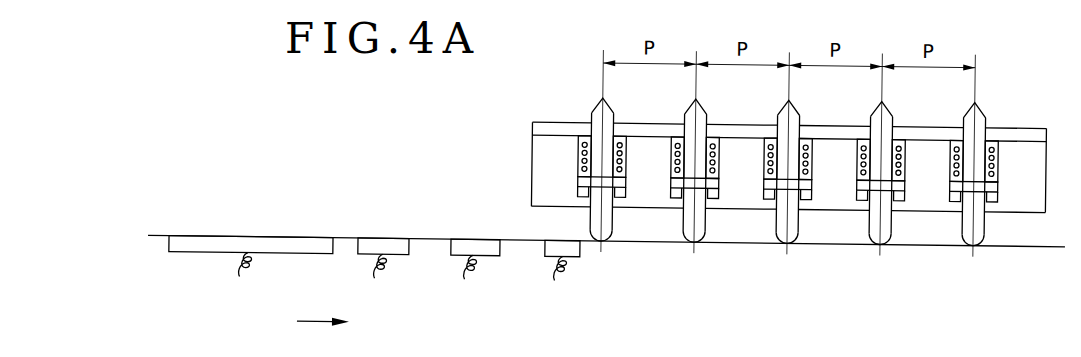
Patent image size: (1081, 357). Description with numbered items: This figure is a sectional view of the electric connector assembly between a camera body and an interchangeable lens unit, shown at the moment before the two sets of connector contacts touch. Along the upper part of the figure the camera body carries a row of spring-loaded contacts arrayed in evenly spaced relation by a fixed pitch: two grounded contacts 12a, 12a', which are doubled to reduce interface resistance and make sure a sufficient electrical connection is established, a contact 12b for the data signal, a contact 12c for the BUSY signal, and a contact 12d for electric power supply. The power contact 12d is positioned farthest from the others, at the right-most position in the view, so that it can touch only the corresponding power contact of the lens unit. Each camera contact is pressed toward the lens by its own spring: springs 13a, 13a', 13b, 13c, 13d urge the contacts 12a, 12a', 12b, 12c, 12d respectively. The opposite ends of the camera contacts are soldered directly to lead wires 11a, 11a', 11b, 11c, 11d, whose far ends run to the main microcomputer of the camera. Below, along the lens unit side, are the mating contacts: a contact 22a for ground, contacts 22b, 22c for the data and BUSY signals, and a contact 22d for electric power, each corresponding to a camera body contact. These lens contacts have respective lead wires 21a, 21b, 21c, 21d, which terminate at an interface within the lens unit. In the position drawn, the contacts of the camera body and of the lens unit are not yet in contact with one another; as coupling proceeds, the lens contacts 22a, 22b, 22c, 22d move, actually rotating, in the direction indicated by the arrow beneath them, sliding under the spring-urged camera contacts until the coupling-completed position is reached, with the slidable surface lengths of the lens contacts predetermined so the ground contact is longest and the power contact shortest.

The lead wire 11a is at (634, 151).
The lead wire 11a' is at (729, 152).
The lead wire 11b is at (785, 99).
The lead wire 11c is at (878, 99).
The lead wire 11d is at (971, 99).
The contact 12a is at (616, 256).
The contact 12a' is at (711, 257).
The contact 12b is at (788, 225).
The contact 12c is at (881, 225).
The contact 12d is at (974, 225).
The spring 13a is at (619, 171).
The spring 13a' is at (714, 172).
The spring 13b is at (806, 169).
The spring 13c is at (899, 169).
The spring 13d is at (992, 169).
The lead wire 21a is at (250, 281).
The lead wire 21b is at (381, 280).
The lead wire 21c is at (469, 281).
The lead wire 21d is at (568, 281).
The contact 22a is at (228, 241).
The contact 22b is at (387, 242).
The contact 22c is at (478, 241).
The contact 22d is at (562, 241).